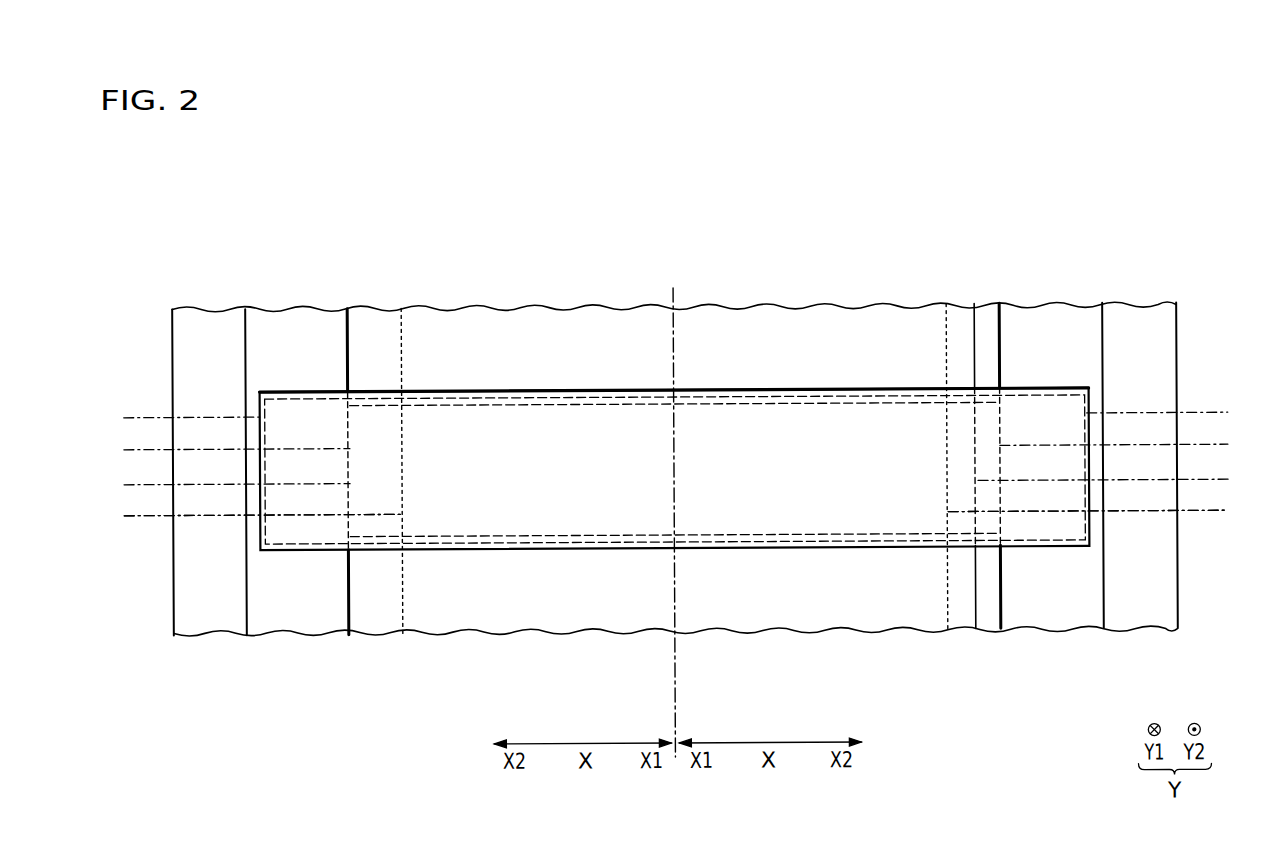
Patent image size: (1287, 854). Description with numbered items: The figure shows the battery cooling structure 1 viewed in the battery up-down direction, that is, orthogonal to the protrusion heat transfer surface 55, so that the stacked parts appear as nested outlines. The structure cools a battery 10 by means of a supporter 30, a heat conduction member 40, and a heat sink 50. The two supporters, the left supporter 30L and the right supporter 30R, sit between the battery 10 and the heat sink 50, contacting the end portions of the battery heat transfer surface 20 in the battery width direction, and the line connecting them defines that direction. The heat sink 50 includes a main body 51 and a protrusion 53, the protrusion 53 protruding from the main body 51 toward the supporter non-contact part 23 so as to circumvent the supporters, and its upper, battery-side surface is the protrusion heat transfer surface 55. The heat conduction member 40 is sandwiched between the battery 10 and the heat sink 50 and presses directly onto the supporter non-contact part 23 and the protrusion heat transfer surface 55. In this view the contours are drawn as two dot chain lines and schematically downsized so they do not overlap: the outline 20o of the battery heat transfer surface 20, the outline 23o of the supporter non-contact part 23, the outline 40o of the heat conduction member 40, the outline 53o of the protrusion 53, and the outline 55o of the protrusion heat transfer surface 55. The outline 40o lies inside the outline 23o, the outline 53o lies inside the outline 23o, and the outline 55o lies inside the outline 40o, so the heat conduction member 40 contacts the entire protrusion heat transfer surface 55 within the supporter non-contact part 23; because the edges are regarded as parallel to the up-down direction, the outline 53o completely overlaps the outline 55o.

The battery cooling structure 1 is at (178, 193).
The battery 10 is at (262, 402).
The battery heat transfer surface 20 is at (675, 469).
The supporter non-contact part 23 is at (675, 469).
The supporter 30 is at (668, 423).
The left supporter 30L is at (286, 330).
The right supporter 30R is at (1057, 325).
The heat conduction member 40 is at (362, 325).
The heat sink 50 is at (675, 423).
The main body 51 is at (205, 325).
The protrusion 53 is at (673, 436).
The protrusion heat transfer surface 55 is at (398, 380).
The outline of the battery heat transfer surface 20o is at (675, 419).
The outline of the supporter non-contact part 23o is at (675, 451).
The outline of the heat conduction member 40o is at (675, 485).
The outline of the protrusion 53o is at (675, 517).
The outline of the protrusion heat transfer surface 55o is at (675, 536).